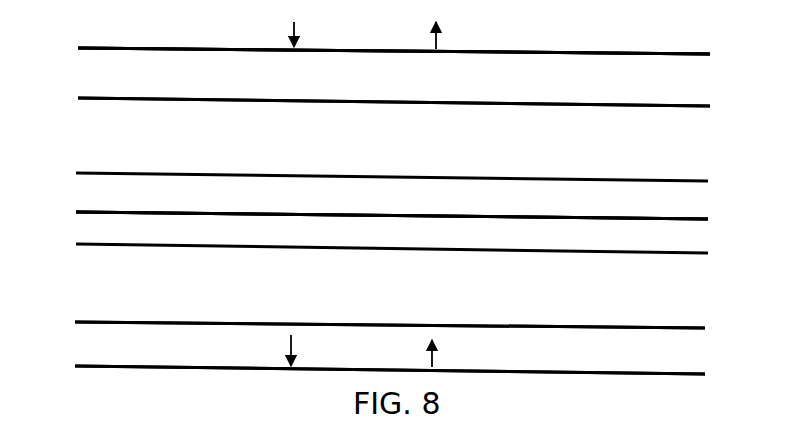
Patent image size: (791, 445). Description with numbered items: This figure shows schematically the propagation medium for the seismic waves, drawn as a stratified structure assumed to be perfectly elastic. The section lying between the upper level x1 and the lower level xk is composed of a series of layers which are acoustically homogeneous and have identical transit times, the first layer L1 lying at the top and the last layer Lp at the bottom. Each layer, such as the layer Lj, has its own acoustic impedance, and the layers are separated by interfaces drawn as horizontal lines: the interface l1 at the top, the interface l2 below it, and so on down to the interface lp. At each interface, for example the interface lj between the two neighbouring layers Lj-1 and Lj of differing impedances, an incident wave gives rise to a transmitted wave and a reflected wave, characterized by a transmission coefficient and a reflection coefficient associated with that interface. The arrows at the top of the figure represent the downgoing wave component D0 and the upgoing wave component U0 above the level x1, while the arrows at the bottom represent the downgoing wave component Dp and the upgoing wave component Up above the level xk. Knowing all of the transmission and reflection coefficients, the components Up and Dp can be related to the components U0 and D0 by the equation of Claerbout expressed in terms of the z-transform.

The level x1 is at (381, 47).
The level xk is at (377, 366).
The interface I1 l1 is at (407, 55).
The interface I2 l2 is at (407, 106).
The interface Ij lj is at (401, 217).
The interface Ip lp is at (402, 324).
The layer L1 is at (394, 77).
The layer Lj-1 is at (392, 196).
The layer Lj is at (392, 232).
The layer Lp is at (390, 348).
The downgoing wave component D0 is at (311, 32).
The upgoing wave component U0 is at (454, 33).
The downgoing wave component Dp is at (306, 350).
The upgoing wave component Up is at (449, 350).